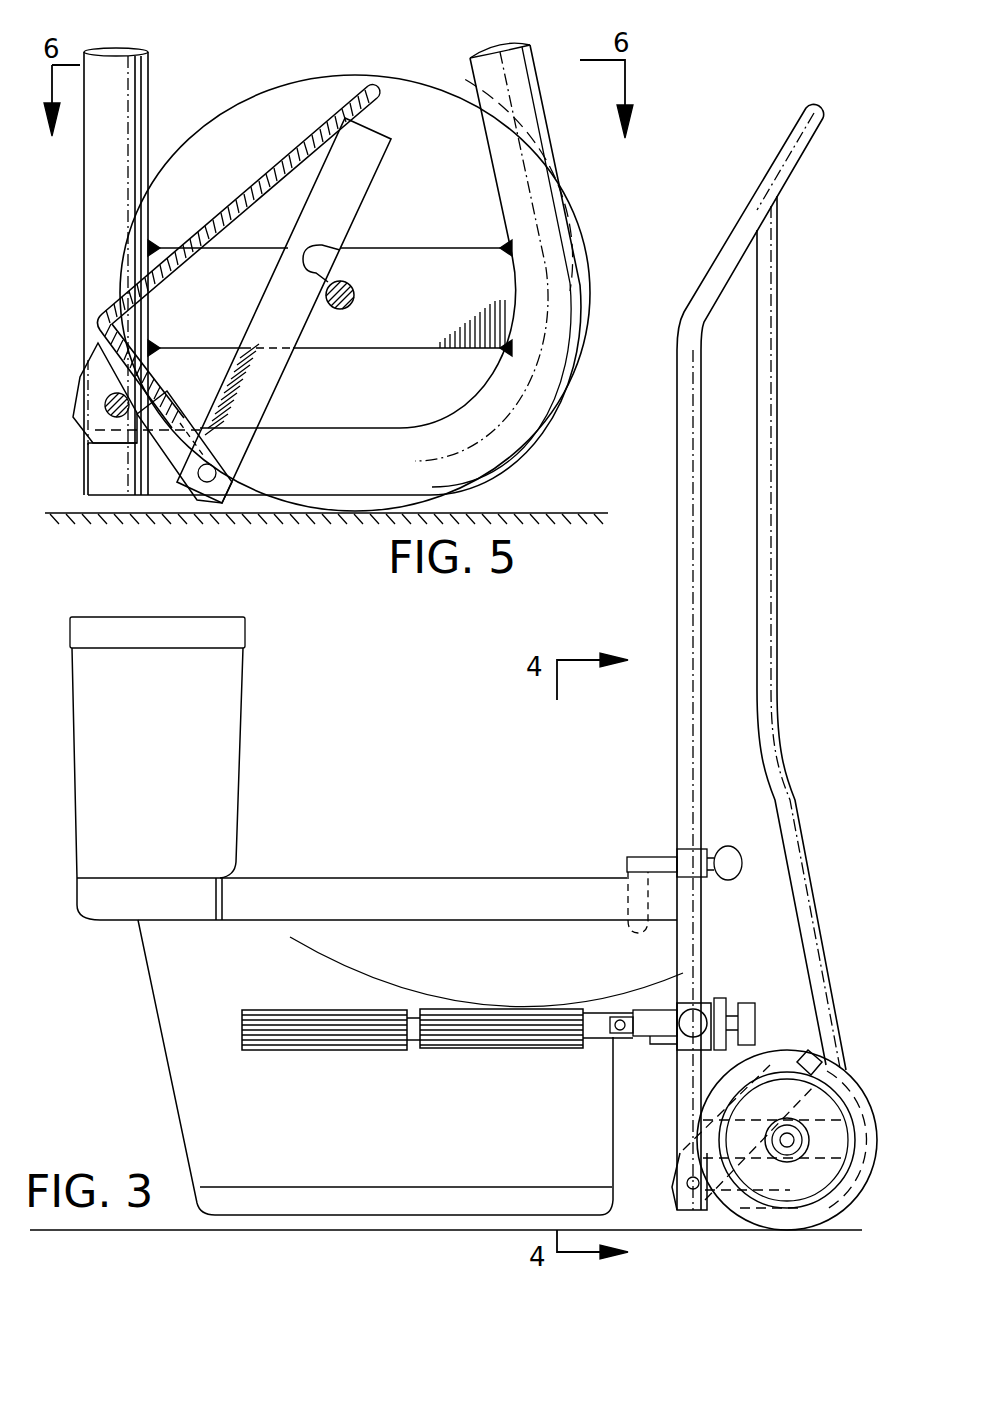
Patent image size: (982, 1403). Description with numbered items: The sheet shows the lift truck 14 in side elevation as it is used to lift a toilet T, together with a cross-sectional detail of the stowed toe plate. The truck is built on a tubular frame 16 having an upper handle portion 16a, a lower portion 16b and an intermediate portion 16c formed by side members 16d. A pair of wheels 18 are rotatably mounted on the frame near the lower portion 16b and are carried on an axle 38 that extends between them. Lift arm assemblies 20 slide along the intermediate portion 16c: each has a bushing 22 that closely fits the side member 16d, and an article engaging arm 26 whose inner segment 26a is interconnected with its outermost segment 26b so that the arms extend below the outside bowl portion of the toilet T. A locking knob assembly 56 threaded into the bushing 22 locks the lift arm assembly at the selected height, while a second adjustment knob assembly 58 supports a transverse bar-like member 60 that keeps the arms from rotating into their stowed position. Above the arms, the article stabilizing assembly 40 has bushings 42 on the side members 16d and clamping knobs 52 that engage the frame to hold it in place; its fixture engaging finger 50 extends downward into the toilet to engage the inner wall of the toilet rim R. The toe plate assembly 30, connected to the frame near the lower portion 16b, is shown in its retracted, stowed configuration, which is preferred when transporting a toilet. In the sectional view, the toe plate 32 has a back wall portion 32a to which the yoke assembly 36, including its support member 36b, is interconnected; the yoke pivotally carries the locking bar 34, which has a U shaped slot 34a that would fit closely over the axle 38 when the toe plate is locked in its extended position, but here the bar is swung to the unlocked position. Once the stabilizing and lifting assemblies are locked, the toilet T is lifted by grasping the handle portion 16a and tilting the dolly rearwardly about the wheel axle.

In FIG. 3, the lift truck 14 is at (761, 179).
In FIG. 5, the tubular frame 16 is at (152, 92).
In FIG. 3, the tubular frame 16 is at (736, 223).
In FIG. 3, the upper handle portion 16a is at (793, 178).
In FIG. 5, the lower portion 16b is at (107, 477).
In FIG. 3, the lower portion 16b is at (697, 1203).
In FIG. 3, the intermediate portion 16c is at (690, 597).
In FIG. 3, the side members 16d is at (700, 383).
In FIG. 5, the wheels 18 is at (402, 102).
In FIG. 3, the wheels 18 is at (857, 1090).
In FIG. 3, the lift arm assemblies 20 is at (354, 1054).
In FIG. 3, the bushing 22 is at (683, 995).
In FIG. 3, the article engaging arm 26 is at (459, 1051).
In FIG. 3, the arm segment 26a is at (512, 1010).
In FIG. 3, the outermost segment 26b is at (290, 1012).
In FIG. 5, the toe plate assembly 30 is at (286, 152).
In FIG. 3, the toe plate assembly 30 is at (705, 1092).
In FIG. 5, the toe plate 32 is at (237, 200).
In FIG. 5, the back wall portion 32a is at (167, 403).
In FIG. 5, the locking bar 34 is at (370, 191).
In FIG. 3, the locking bar 34 is at (812, 1055).
In FIG. 5, the U shaped slot 34a is at (313, 267).
In FIG. 5, the yoke assembly 36 is at (127, 428).
In FIG. 5, the support member 36b is at (210, 451).
In FIG. 5, the axle 38 is at (356, 296).
In FIG. 3, the axle 38 is at (787, 1150).
In FIG. 3, the article stabilizing assembly 40 is at (654, 854).
In FIG. 3, the bushings 42 is at (694, 845).
In FIG. 3, the fixture engaging finger 50 is at (616, 935).
In FIG. 3, the clamping knobs 52 is at (737, 869).
In FIG. 3, the locking knob assemblies 56 is at (668, 1033).
In FIG. 3, the second adjustment knob assembly 58 is at (748, 1005).
In FIG. 3, the bar-like member 60 is at (720, 1003).
In FIG. 3, the toilet T is at (320, 878).
In FIG. 3, the toilet rim R is at (616, 898).